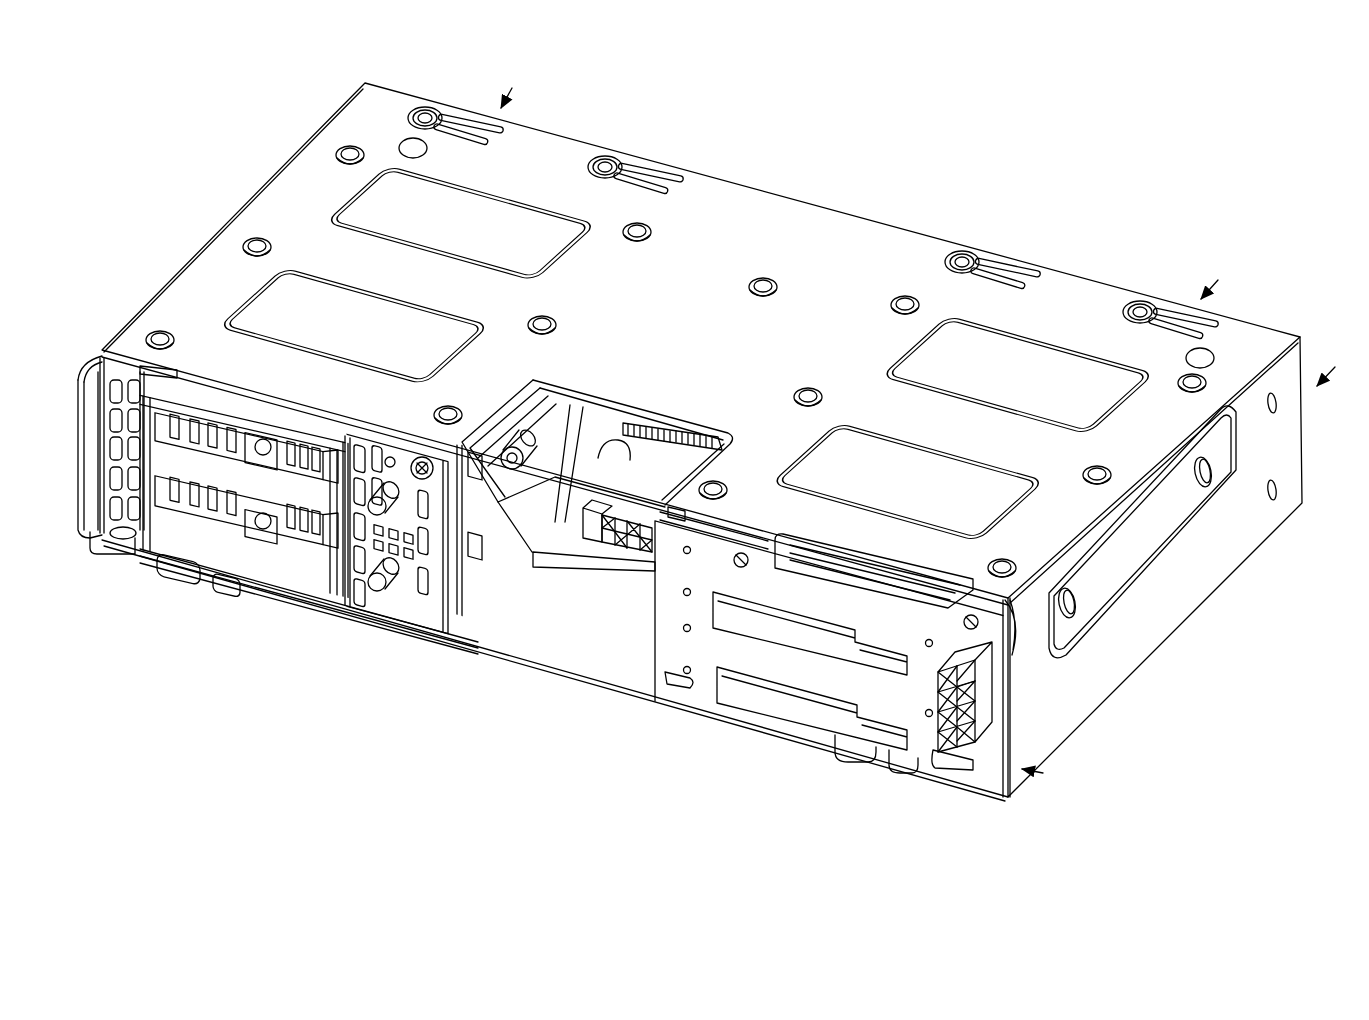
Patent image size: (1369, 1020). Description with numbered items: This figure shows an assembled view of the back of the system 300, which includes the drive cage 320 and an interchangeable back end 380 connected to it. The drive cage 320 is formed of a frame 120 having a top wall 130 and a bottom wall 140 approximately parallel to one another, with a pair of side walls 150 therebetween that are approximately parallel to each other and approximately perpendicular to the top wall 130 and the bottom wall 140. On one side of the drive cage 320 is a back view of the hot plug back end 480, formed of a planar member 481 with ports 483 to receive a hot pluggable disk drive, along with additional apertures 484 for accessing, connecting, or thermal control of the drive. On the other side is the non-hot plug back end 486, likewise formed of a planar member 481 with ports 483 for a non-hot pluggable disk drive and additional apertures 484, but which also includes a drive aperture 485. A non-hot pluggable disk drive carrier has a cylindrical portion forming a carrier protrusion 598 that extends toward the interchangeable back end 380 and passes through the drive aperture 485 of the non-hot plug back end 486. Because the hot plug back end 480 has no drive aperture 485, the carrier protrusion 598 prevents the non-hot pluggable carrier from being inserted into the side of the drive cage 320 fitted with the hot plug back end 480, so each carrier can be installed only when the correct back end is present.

The system 300 is at (905, 118).
The frame 120 is at (1306, 327).
The top wall 130 is at (733, 205).
The bottom wall 140 is at (530, 645).
The side walls 150 is at (1187, 580).
The drive cage 320 is at (217, 204).
The interchangeable back end 380 is at (101, 382).
The hot plug back end 480 is at (930, 735).
The planar member 481 is at (100, 508).
The ports 483 is at (200, 465).
The apertures 484 is at (407, 547).
The drive aperture 485 is at (380, 500).
The non-hot plug back end 486 is at (340, 590).
The carrier protrusion 598 is at (357, 603).